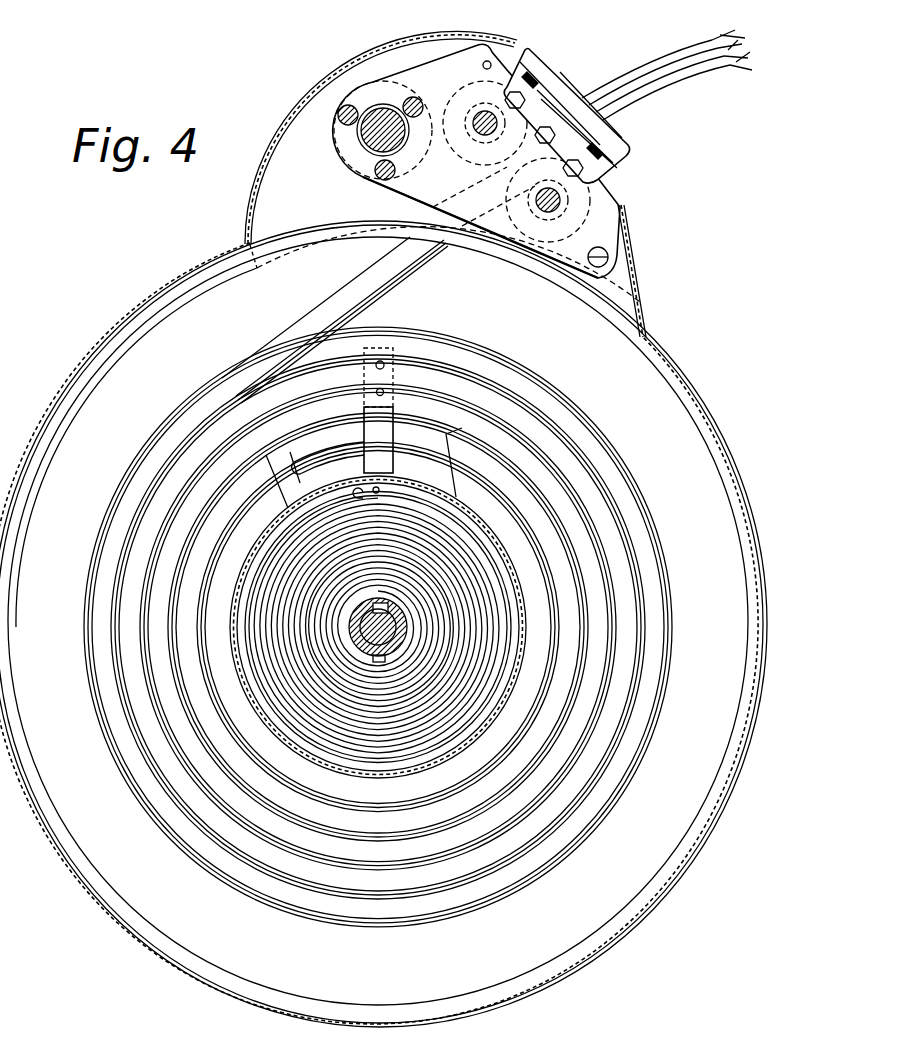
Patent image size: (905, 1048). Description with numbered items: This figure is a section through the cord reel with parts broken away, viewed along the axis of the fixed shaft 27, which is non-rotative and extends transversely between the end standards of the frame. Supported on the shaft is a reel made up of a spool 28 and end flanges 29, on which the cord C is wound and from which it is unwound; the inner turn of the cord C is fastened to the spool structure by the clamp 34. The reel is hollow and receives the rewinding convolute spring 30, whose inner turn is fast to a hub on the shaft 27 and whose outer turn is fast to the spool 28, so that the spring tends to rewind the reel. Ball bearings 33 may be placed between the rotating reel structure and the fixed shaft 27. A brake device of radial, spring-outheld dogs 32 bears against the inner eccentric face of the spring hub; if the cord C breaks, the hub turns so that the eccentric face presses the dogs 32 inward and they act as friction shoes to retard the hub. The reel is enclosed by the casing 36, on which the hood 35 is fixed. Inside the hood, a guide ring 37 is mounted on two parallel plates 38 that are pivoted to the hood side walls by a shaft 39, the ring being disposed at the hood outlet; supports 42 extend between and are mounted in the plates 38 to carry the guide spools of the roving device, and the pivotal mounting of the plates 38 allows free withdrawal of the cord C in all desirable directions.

The end flanges 29 is at (122, 365).
The casing 36 is at (223, 270).
The hood 35 is at (337, 75).
The plates 38 is at (417, 187).
The shaft 39 is at (368, 142).
The supports 42 is at (538, 198).
The guide ring 37 is at (558, 65).
The clamp 34 is at (393, 412).
The spool 28 is at (517, 606).
The rewinding convolute spring 30 is at (490, 670).
The ball bearings 33 is at (390, 607).
The dogs 32 is at (363, 608).
The fixed shaft 27 is at (367, 640).
The cord C is at (520, 415).